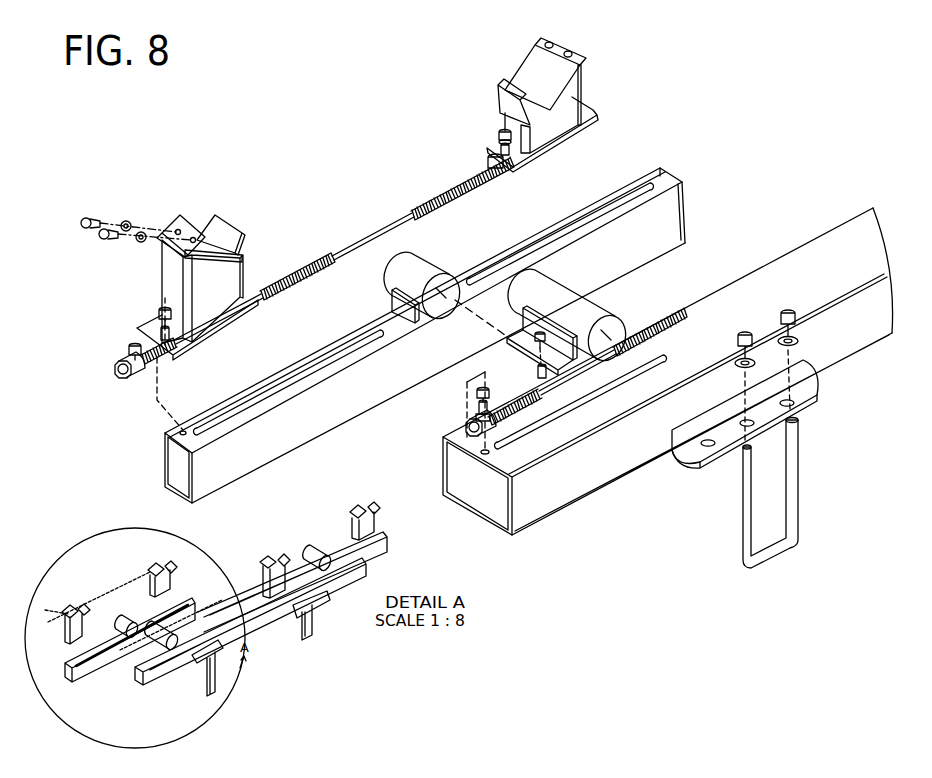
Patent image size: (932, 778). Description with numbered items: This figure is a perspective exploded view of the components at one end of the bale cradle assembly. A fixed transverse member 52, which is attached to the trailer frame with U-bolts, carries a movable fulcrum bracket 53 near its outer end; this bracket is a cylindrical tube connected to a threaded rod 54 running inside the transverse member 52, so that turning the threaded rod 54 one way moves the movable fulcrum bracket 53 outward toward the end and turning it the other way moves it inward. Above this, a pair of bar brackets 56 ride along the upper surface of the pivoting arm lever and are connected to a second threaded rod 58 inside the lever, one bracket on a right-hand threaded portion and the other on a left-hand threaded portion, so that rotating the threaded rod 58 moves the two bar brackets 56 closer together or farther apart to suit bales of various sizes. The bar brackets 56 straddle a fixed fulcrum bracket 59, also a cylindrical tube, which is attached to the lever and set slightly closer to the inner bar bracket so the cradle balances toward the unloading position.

The fixed transverse member 52 is at (573, 500).
The movable fulcrum bracket 53 is at (607, 297).
The threaded rod 54 is at (667, 313).
The bar bracket 56 is at (162, 273).
The threaded rod 58 is at (382, 230).
The fixed fulcrum bracket 59 is at (437, 262).